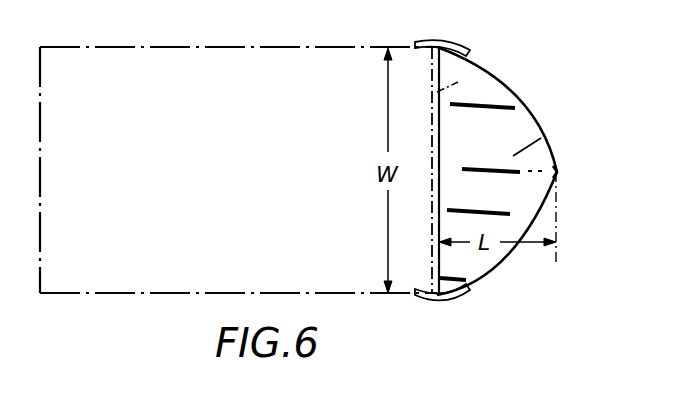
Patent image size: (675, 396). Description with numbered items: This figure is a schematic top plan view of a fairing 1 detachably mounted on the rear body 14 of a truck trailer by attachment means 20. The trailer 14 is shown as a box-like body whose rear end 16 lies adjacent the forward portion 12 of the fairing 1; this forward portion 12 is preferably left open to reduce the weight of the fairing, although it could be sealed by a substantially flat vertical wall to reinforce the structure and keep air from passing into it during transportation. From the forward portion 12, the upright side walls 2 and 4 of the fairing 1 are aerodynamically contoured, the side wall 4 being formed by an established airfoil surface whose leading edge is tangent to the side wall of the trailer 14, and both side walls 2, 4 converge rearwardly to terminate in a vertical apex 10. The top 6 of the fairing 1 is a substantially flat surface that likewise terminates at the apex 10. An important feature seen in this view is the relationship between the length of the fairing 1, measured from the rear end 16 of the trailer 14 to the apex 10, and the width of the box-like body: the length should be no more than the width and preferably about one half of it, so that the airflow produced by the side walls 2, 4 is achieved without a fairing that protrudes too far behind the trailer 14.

The fairing 1 is at (558, 120).
The upright side wall 2 is at (500, 263).
The upright side wall 4 is at (518, 99).
The top 6 is at (541, 138).
The vertical apex 10 is at (560, 171).
The forward portion 12 is at (433, 68).
The trailer 14 is at (262, 180).
The rear end 16 is at (458, 82).
The attachment means 20 is at (457, 44).